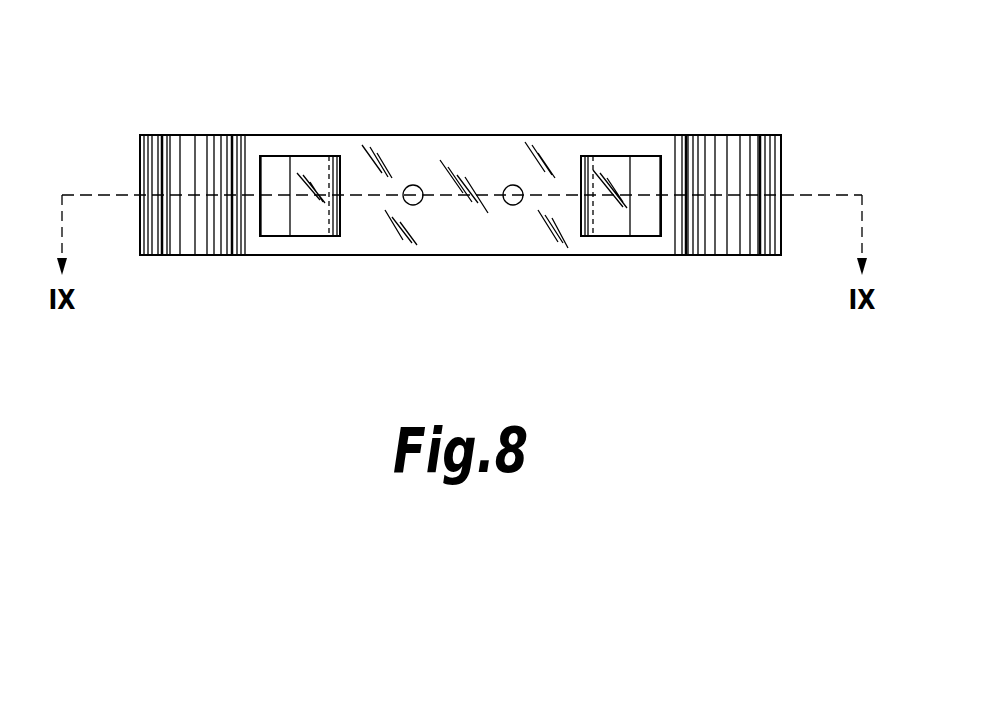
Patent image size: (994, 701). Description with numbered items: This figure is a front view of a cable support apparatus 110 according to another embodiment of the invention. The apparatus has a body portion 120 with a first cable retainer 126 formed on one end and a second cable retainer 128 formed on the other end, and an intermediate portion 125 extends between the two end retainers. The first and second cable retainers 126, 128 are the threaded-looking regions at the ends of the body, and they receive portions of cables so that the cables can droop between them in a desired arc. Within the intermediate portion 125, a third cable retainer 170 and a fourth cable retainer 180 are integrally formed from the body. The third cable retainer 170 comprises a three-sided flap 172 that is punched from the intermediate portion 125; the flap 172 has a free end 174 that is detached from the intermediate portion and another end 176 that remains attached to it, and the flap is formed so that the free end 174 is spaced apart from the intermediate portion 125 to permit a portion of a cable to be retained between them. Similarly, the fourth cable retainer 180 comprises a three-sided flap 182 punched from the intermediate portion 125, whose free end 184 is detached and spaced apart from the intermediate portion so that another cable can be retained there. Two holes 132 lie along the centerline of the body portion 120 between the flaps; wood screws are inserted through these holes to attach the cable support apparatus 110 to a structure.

The cable support apparatus 110 is at (692, 104).
The body portion 120 is at (540, 126).
The intermediate portion 125 is at (505, 242).
The first cable retainer 126 is at (132, 158).
The second cable retainer 128 is at (792, 152).
The holes 132 is at (406, 190).
The third cable retainer 170 is at (304, 146).
The flap 172 is at (312, 247).
The free end 174 is at (290, 203).
The another end 176 is at (342, 207).
The fourth cable retainer 180 is at (600, 146).
The flap 182 is at (603, 247).
The free end 184 is at (632, 207).